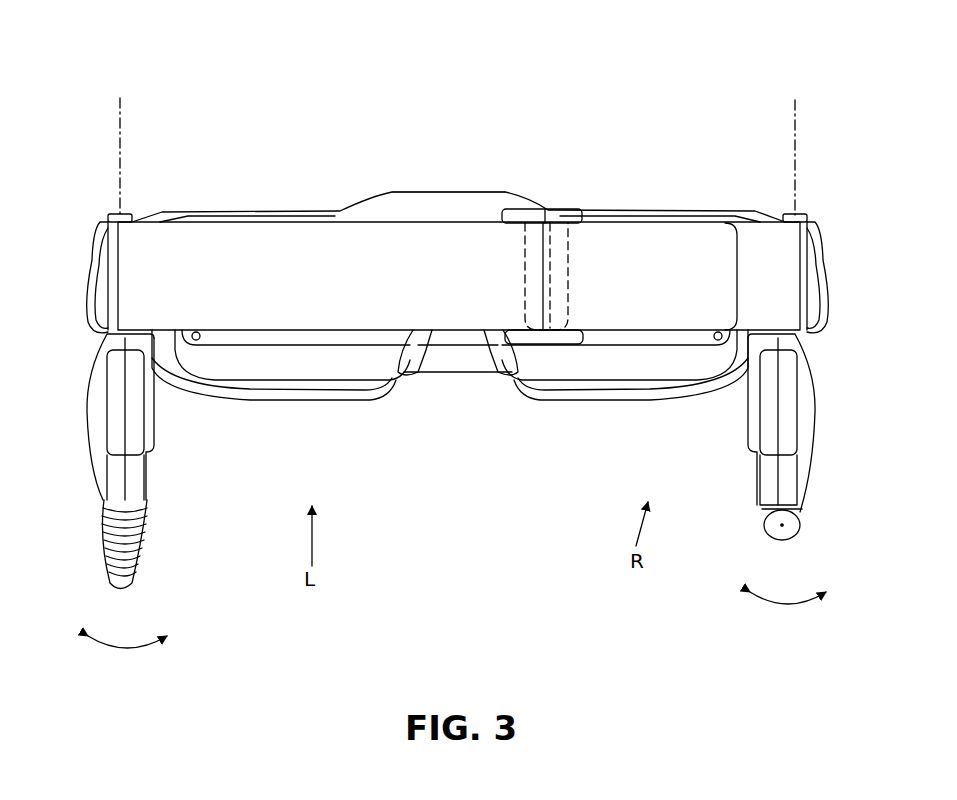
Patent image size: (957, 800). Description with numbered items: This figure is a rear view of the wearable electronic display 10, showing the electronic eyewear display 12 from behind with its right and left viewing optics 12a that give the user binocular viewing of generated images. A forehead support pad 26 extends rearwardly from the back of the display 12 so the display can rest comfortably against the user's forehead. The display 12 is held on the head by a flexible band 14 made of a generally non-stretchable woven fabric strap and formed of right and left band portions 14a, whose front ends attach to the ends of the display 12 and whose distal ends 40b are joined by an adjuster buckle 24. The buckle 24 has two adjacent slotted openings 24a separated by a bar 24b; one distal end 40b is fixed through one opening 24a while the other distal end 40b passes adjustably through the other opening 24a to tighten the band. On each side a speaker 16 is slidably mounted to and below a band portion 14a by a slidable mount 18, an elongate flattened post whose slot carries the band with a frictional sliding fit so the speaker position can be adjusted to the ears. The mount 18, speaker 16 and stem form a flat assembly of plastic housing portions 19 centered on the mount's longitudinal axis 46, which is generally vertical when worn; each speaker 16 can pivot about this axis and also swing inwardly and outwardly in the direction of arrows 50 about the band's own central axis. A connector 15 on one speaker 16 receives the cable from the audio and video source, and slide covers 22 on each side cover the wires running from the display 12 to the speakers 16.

The wearable electronic display 10 is at (349, 102).
The electronic eyewear display 12 is at (305, 405).
The viewing optics 12a is at (240, 360).
The flexible band 14 is at (376, 240).
The band portion 14a is at (480, 293).
The connector 15 is at (138, 576).
The speaker 16 is at (90, 410).
The slidable mount 18 is at (130, 215).
The housing portion 19 is at (106, 494).
The slide cover 22 is at (95, 296).
The adjuster buckle 24 is at (584, 211).
The slotted opening 24a is at (528, 215).
The bar 24b is at (550, 328).
The forehead support pad 26 is at (438, 198).
The distal end 40b is at (578, 250).
The longitudinal axis 46 is at (120, 130).
The arrows 50 is at (126, 652).